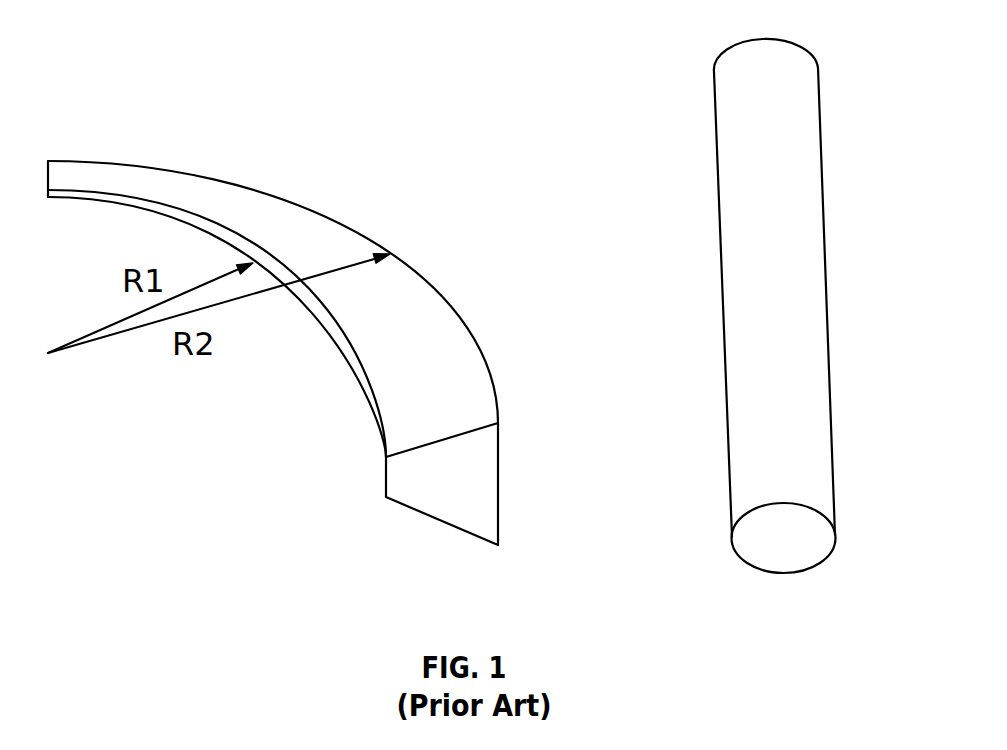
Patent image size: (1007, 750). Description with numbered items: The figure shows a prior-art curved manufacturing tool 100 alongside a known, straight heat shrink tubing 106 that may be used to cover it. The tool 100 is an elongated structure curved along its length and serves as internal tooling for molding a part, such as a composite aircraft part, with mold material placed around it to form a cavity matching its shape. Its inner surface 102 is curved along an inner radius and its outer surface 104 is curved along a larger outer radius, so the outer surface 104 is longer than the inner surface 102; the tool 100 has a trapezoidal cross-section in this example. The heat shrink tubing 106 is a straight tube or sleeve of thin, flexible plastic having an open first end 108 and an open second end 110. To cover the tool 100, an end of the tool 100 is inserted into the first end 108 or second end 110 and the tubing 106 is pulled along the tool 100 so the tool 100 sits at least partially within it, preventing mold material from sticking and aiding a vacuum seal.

The tool 100 is at (313, 353).
The inner surface 102 is at (143, 203).
The outer surface 104 is at (488, 358).
The heat shrink tubing 106 is at (820, 308).
The first end 108 is at (785, 573).
The second end 110 is at (765, 39).